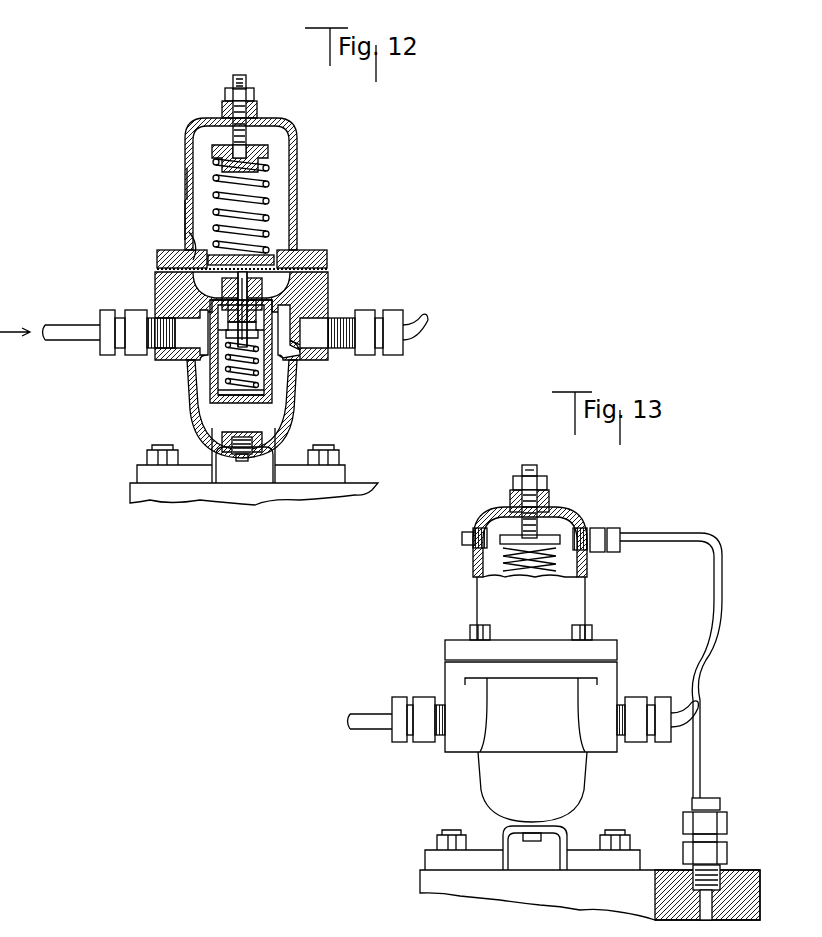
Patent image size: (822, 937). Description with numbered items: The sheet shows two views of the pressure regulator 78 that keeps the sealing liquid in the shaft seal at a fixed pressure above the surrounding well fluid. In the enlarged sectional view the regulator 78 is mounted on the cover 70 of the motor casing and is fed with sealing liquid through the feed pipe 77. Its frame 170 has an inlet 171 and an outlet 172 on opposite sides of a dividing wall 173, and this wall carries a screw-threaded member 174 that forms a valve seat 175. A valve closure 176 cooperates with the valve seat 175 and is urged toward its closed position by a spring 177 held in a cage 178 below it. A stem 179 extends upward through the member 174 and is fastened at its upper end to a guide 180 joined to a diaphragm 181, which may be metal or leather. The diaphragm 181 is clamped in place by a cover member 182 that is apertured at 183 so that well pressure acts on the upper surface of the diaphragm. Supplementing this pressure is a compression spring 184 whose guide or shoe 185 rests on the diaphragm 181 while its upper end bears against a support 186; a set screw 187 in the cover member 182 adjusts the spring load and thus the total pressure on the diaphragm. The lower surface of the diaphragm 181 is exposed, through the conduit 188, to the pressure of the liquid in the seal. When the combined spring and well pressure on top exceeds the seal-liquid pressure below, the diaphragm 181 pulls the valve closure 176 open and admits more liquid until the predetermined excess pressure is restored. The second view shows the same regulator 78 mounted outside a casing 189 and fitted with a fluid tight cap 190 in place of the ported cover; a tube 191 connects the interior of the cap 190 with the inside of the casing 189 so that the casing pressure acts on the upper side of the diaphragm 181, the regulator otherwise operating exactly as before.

In FIG. 12, the cover 70 is at (378, 492).
In FIG. 12, the feed pipe 77 is at (70, 327).
In FIG. 12, the pressure regulator 78 is at (318, 175).
In FIG. 13, the pressure regulator 78 is at (419, 671).
In FIG. 12, the frame 170 is at (300, 398).
In FIG. 12, the inlet 171 is at (226, 324).
In FIG. 12, the outlet 172 is at (302, 306).
In FIG. 12, the dividing wall 173 is at (192, 238).
In FIG. 12, the member 174 is at (322, 256).
In FIG. 12, the valve seat 175 is at (333, 276).
In FIG. 12, the valve closure 176 is at (236, 340).
In FIG. 12, the spring 177 is at (272, 379).
In FIG. 12, the cage 178 is at (272, 396).
In FIG. 12, the stem 179 is at (286, 284).
In FIG. 12, the guide 180 is at (270, 278).
In FIG. 12, the diaphragm 181 is at (160, 262).
In FIG. 12, the cover member 182 is at (186, 175).
In FIG. 12, the aperture 183 is at (190, 150).
In FIG. 12, the compression spring 184 is at (217, 195).
In FIG. 12, the guide or shoe 185 is at (258, 262).
In FIG. 12, the support 186 is at (267, 150).
In FIG. 12, the set screw 187 is at (249, 80).
In FIG. 12, the conduit 188 is at (412, 325).
In FIG. 13, the conduit 188 is at (705, 710).
In FIG. 13, the casing 189 is at (445, 893).
In FIG. 13, the fluid tight cap 190 is at (480, 607).
In FIG. 13, the tube 191 is at (710, 545).